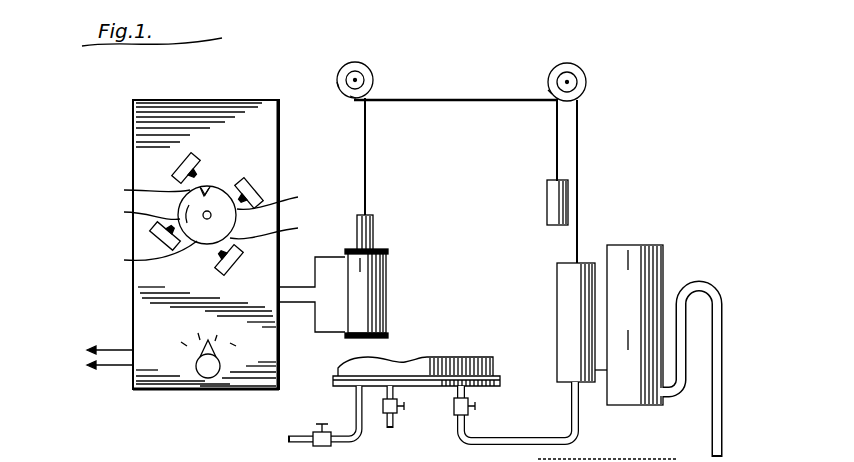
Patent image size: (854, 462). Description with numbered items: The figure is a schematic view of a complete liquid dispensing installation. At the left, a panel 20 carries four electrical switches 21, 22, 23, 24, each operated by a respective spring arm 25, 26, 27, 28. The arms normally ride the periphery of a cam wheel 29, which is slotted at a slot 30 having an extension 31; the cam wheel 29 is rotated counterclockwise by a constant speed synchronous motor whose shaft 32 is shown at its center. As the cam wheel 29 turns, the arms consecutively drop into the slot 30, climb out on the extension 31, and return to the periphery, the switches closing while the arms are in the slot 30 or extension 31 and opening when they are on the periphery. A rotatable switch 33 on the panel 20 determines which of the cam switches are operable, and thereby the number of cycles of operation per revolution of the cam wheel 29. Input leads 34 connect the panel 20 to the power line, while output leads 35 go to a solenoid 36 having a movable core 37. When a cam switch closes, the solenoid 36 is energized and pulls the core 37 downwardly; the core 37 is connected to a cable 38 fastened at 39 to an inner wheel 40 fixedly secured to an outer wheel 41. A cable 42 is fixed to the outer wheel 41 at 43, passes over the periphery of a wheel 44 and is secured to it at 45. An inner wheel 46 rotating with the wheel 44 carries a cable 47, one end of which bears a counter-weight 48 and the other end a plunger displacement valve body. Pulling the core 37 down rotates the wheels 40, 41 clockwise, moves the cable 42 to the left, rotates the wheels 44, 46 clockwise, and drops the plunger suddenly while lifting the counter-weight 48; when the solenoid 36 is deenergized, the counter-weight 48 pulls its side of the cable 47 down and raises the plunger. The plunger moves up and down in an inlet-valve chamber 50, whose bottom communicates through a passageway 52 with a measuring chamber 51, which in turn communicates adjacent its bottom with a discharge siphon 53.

The panel 20 is at (140, 284).
The electrical switch 21 is at (150, 236).
The electrical switch 22 is at (178, 163).
The electrical switch 23 is at (262, 185).
The electrical switch 24 is at (242, 260).
The spring arm 25 is at (137, 212).
The spring arm 26 is at (142, 188).
The spring arm 27 is at (281, 194).
The spring arm 28 is at (277, 226).
The cam wheel 29 is at (145, 255).
The slot 30 is at (204, 186).
The extension 31 is at (214, 192).
The motor shaft 32 is at (213, 215).
The rotatable switch 33 is at (205, 379).
The input leads 34 is at (120, 359).
The output leads 35 is at (298, 303).
The solenoid 36 is at (384, 298).
The movable core 37 is at (375, 236).
The cable 38 is at (367, 158).
The fastening point 39 is at (352, 98).
The inner wheel 40 is at (338, 88).
The outer wheel 41 is at (362, 63).
The cable 42 is at (472, 100).
The fastening point 43 is at (366, 85).
The wheel 44 is at (588, 80).
The fastening point 45 is at (548, 90).
The inner wheel 46 is at (575, 64).
The cable 47 is at (558, 146).
The counter-weight 48 is at (546, 204).
The inlet-valve chamber 50 is at (552, 323).
The measuring chamber 51 is at (670, 280).
The passageway 52 is at (573, 388).
The discharge siphon 53 is at (727, 328).